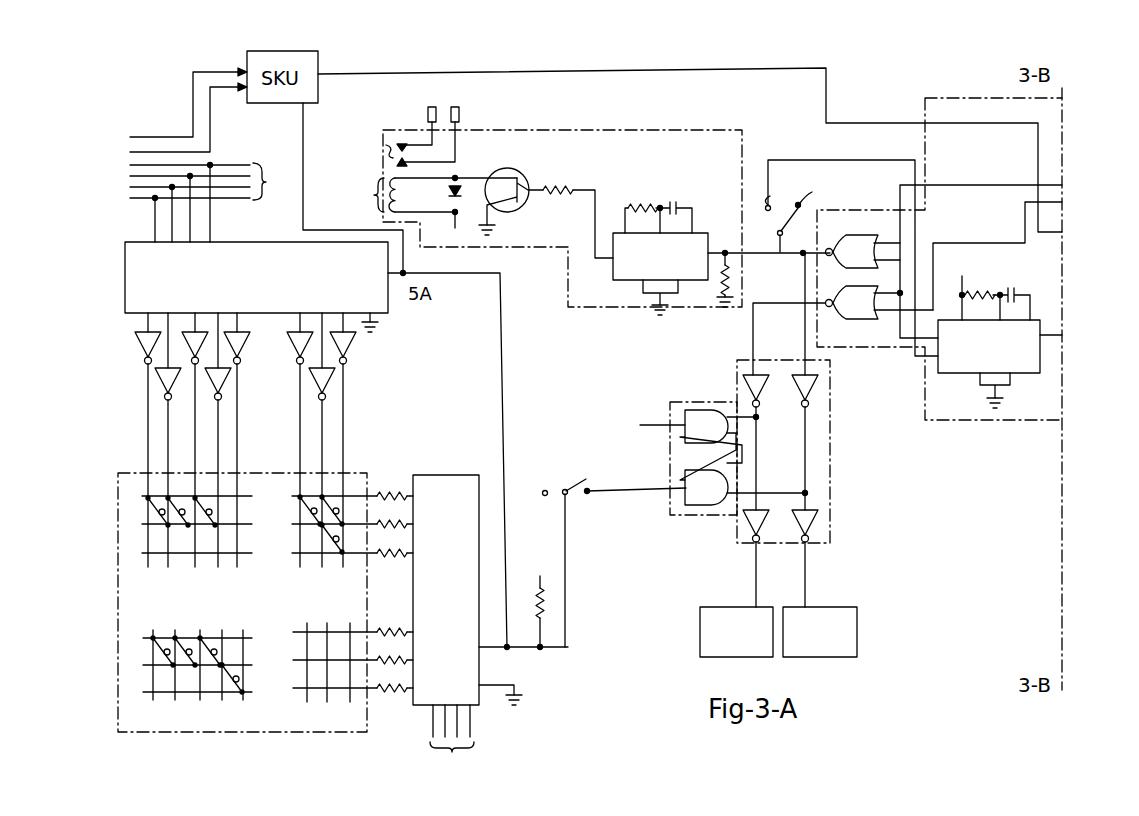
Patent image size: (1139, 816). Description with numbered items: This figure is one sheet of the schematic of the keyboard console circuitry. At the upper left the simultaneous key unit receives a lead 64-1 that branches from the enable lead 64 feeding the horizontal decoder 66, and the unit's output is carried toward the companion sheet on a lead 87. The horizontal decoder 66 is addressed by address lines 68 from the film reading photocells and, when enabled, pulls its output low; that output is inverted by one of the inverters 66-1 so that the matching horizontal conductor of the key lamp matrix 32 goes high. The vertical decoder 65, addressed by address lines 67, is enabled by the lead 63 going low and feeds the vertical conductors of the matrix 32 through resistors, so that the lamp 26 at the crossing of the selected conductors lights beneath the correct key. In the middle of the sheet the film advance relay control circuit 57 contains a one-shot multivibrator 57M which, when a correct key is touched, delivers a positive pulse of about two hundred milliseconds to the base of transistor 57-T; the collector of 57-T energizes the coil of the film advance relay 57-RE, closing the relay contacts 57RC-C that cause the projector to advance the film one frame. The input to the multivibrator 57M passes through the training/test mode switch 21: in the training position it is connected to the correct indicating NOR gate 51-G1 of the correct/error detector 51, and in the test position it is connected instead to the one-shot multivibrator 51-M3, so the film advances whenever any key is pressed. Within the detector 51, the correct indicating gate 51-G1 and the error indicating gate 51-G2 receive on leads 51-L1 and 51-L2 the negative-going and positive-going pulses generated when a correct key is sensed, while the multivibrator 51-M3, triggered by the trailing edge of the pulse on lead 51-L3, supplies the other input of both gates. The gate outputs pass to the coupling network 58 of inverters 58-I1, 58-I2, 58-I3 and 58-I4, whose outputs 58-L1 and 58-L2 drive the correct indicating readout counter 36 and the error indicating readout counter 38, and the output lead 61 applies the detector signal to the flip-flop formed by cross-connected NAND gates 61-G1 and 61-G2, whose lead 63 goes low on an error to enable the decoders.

The output line from SKU 87 is at (514, 67).
The address lines 68 is at (208, 203).
The horizontal decoder 66 is at (134, 242).
The inverters 66-1 is at (326, 383).
The lead 64-1 is at (303, 214).
The enable lead 64 is at (505, 396).
The key lamp matrix 32 is at (367, 473).
The lamp 26 is at (150, 517).
The vertical decoder 65 is at (446, 475).
The address lines 67 is at (455, 735).
The output lead 63 is at (620, 493).
The film advance relay control circuit 57 is at (666, 128).
The relay contacts 57RC-C is at (386, 146).
The film advance relay 57-RE is at (427, 210).
The transistor 57-T is at (522, 170).
The one-shot multivibrator 57M is at (695, 225).
The test/train switch 21 is at (801, 193).
The correct/error detector 51 is at (989, 422).
The correct indicating NOR gate 51-G1 is at (863, 251).
The error indicating NOR gate 51-G2 is at (843, 330).
The lead 51-L1 is at (1022, 185).
The output lead 51-L2 is at (1008, 243).
The lead 51-L3 is at (1055, 339).
The one-shot multivibrator 51-M3 is at (1040, 375).
The coupling network 58 is at (835, 462).
The inverter 58-I1 is at (745, 384).
The inverter 58-I2 is at (818, 383).
The inverter 58-I3 is at (745, 526).
The inverter 58-I4 is at (818, 517).
The output lead 58-L1 is at (805, 579).
The output lead 58-L2 is at (756, 574).
The correct indicating readout counter 36 is at (700, 633).
The error indicating readout counter 38 is at (857, 628).
The output lead 61 is at (675, 402).
The cross-connected NAND gate 61-G1 is at (688, 445).
The cross-connected NAND gate 61-G2 is at (711, 471).